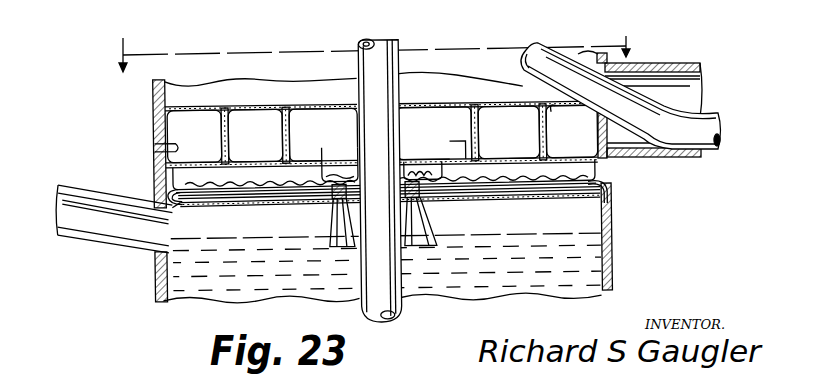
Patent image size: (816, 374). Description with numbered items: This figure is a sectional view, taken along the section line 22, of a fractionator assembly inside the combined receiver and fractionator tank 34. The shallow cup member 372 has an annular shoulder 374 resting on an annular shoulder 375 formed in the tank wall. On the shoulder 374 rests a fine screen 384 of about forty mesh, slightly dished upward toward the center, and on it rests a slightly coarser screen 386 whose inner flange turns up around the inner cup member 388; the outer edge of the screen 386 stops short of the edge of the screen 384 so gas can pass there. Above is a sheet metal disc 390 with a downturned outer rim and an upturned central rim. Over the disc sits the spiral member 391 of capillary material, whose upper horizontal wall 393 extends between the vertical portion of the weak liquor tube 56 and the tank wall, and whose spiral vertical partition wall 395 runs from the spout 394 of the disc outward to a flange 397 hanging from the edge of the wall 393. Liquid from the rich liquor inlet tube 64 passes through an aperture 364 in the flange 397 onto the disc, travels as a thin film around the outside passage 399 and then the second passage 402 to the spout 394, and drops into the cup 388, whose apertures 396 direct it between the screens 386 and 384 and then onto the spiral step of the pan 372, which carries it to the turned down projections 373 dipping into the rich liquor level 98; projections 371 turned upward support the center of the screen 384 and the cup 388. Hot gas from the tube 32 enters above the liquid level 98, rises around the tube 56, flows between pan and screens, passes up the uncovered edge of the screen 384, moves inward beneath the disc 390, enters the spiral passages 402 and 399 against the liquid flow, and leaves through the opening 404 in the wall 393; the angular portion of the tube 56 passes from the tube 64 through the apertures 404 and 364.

The section line 22 is at (371, 44).
The tube 32 is at (80, 183).
The combined receiver and fractionator tank 34 is at (216, 96).
The weak liquor tube 56 is at (392, 62).
The rich liquor inlet tube 64 is at (652, 67).
The rich liquor level 98 is at (545, 214).
The aperture 364 is at (591, 136).
The projections 371 is at (421, 239).
The shallow cup member 372 is at (211, 204).
The turned down projections 373 is at (333, 220).
The annular shoulder 374 is at (611, 210).
The annular shoulder 375 is at (613, 187).
The fine screen 384 is at (172, 184).
The screen 386 is at (238, 185).
The inner cup member 388 is at (333, 139).
The sheet metal disc 390 is at (423, 158).
The spiral member 391 is at (282, 100).
The upper horizontal wall 393 is at (449, 106).
The spout 394 is at (418, 158).
The spiral vertical partition wall 395 is at (231, 120).
The apertures 396 is at (348, 171).
The flange 397 is at (168, 148).
The outside passage 399 is at (190, 127).
The second passage 402 is at (384, 134).
The opening 404 is at (568, 113).